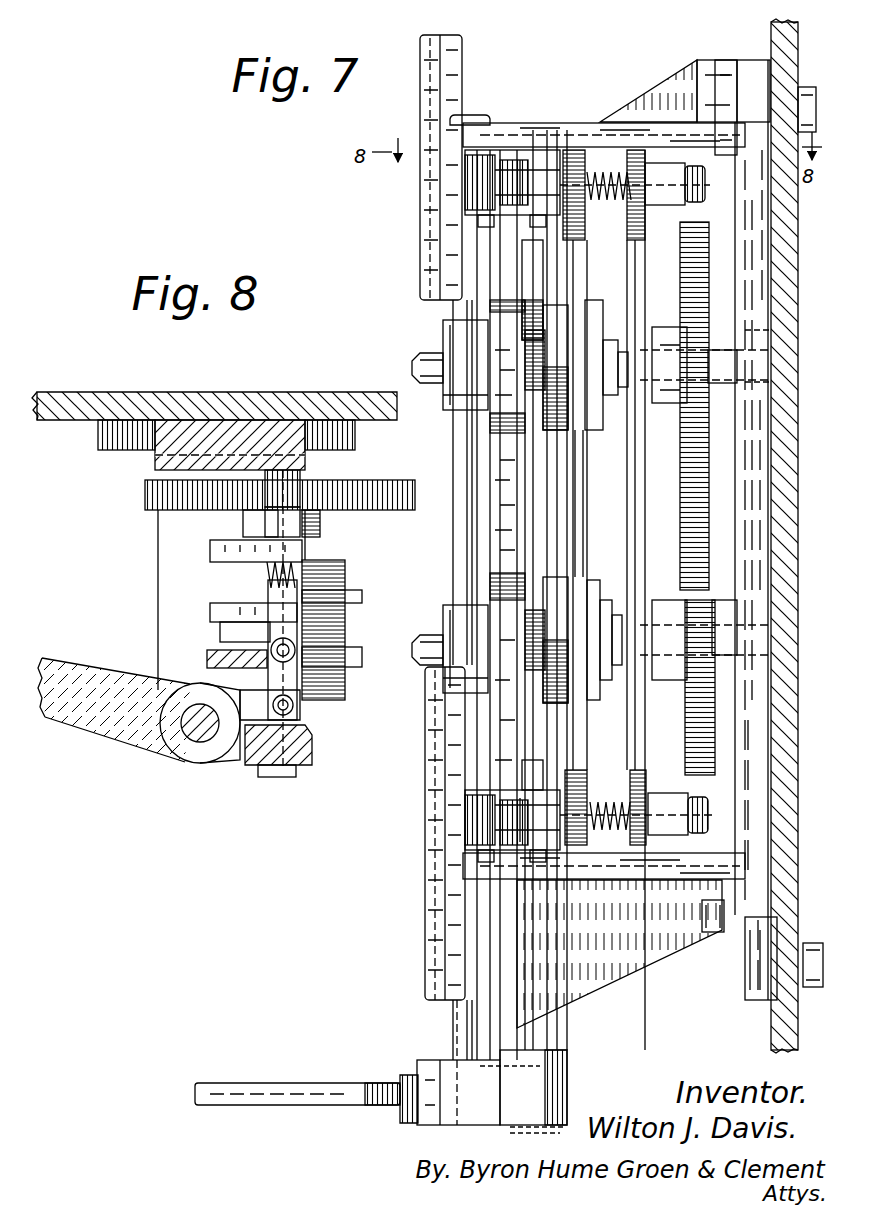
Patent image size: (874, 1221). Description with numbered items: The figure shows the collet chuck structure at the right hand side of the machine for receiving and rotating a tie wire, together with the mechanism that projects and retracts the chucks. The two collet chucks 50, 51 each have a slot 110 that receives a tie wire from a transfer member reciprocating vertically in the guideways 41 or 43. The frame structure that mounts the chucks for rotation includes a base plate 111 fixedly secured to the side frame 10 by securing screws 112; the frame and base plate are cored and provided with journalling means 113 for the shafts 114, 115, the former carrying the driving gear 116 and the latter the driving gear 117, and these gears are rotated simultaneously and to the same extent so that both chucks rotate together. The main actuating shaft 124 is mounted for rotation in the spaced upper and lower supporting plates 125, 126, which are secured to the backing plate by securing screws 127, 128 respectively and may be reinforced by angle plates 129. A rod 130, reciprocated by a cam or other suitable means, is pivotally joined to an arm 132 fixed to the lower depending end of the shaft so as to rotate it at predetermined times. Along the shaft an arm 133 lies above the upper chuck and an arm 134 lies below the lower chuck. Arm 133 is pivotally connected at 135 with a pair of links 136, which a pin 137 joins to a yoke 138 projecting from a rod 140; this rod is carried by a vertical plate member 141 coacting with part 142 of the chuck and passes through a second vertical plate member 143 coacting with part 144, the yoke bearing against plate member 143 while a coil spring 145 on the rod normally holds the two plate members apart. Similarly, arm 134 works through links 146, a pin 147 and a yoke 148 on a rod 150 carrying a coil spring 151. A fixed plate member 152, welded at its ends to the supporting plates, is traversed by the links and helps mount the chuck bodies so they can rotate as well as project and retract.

In FIG. 7, the side frame 10 is at (785, 502).
In FIG. 8, the side frame 10 is at (216, 390).
In FIG. 7, the guideways 41 is at (420, 222).
In FIG. 7, the guideways 43 is at (425, 920).
In FIG. 7, the collet chuck 50 is at (470, 342).
In FIG. 8, the collet chuck 50 is at (318, 720).
In FIG. 7, the collet chuck 51 is at (445, 665).
In FIG. 8, the slot 110 is at (285, 777).
In FIG. 7, the base plate 111 is at (762, 443).
In FIG. 8, the base plate 111 is at (185, 422).
In FIG. 7, the securing screws 112 is at (760, 64).
In FIG. 7, the journalling means 113 is at (773, 346).
In FIG. 7, the shaft 114 is at (720, 346).
In FIG. 7, the shaft 115 is at (720, 660).
In FIG. 7, the driving gear 116 is at (710, 265).
In FIG. 8, the driving gear 116 is at (150, 495).
In FIG. 7, the driving gear 117 is at (702, 735).
In FIG. 7, the main actuating shaft 124 is at (466, 532).
In FIG. 8, the main actuating shaft 124 is at (198, 742).
In FIG. 7, the upper supporting plate 125 is at (605, 120).
In FIG. 7, the lower supporting plate 126 is at (622, 880).
In FIG. 7, the securing screws 127 is at (722, 70).
In FIG. 7, the securing screws 128 is at (715, 936).
In FIG. 7, the angle plates 129 is at (667, 82).
In FIG. 7, the rod 130 is at (237, 1085).
In FIG. 8, the arm 132 is at (92, 722).
In FIG. 8, the arm 133 is at (240, 757).
In FIG. 7, the arm 134 is at (465, 817).
In FIG. 7, the pivot connection 135 is at (465, 183).
In FIG. 8, the pivot connection 135 is at (312, 738).
In FIG. 7, the links 136 is at (510, 160).
In FIG. 8, the links 136 is at (245, 672).
In FIG. 7, the pin 137 is at (478, 221).
In FIG. 7, the yoke 138 is at (572, 150).
In FIG. 8, the yoke 138 is at (232, 612).
In FIG. 7, the rod 140 is at (666, 192).
In FIG. 8, the rod 140 is at (265, 520).
In FIG. 7, the plate member 141 is at (645, 448).
In FIG. 8, the plate member 141 is at (212, 547).
In FIG. 7, the part 142 is at (622, 402).
In FIG. 8, the part 142 is at (322, 528).
In FIG. 7, the plate member 143 is at (583, 526).
In FIG. 8, the plate member 143 is at (348, 604).
In FIG. 7, the part 144 is at (545, 423).
In FIG. 8, the part 144 is at (235, 626).
In FIG. 7, the coil spring 145 is at (605, 202).
In FIG. 8, the coil spring 145 is at (265, 577).
In FIG. 7, the links 146 is at (522, 862).
In FIG. 7, the pin 147 is at (482, 806).
In FIG. 7, the yoke 148 is at (548, 857).
In FIG. 7, the rod 150 is at (666, 840).
In FIG. 7, the coil spring 151 is at (610, 800).
In FIG. 7, the plate member 152 is at (530, 378).
In FIG. 8, the plate member 152 is at (352, 650).